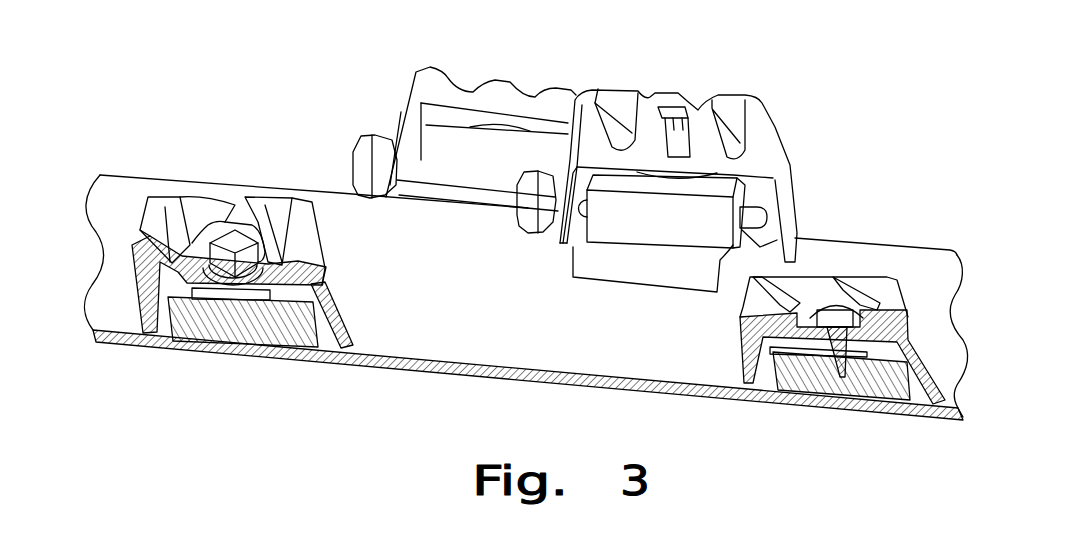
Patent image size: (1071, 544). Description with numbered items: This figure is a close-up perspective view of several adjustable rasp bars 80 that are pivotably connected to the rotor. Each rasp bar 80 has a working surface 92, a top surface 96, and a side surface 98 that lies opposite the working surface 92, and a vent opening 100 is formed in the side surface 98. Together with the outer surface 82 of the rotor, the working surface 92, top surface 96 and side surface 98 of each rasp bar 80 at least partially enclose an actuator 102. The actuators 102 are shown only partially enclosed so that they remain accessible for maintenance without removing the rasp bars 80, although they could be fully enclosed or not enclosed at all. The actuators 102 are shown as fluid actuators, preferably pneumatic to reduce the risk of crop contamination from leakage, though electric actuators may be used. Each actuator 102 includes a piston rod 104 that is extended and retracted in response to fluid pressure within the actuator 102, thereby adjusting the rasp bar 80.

The rasp bar 80 is at (433, 70).
The outer surface 82 is at (452, 332).
The working surface 92 is at (313, 227).
The top surface 96 is at (497, 82).
The side surface 98 is at (404, 115).
The vent opening 100 is at (384, 195).
The actuator 102 is at (480, 180).
The piston rod 104 is at (752, 227).